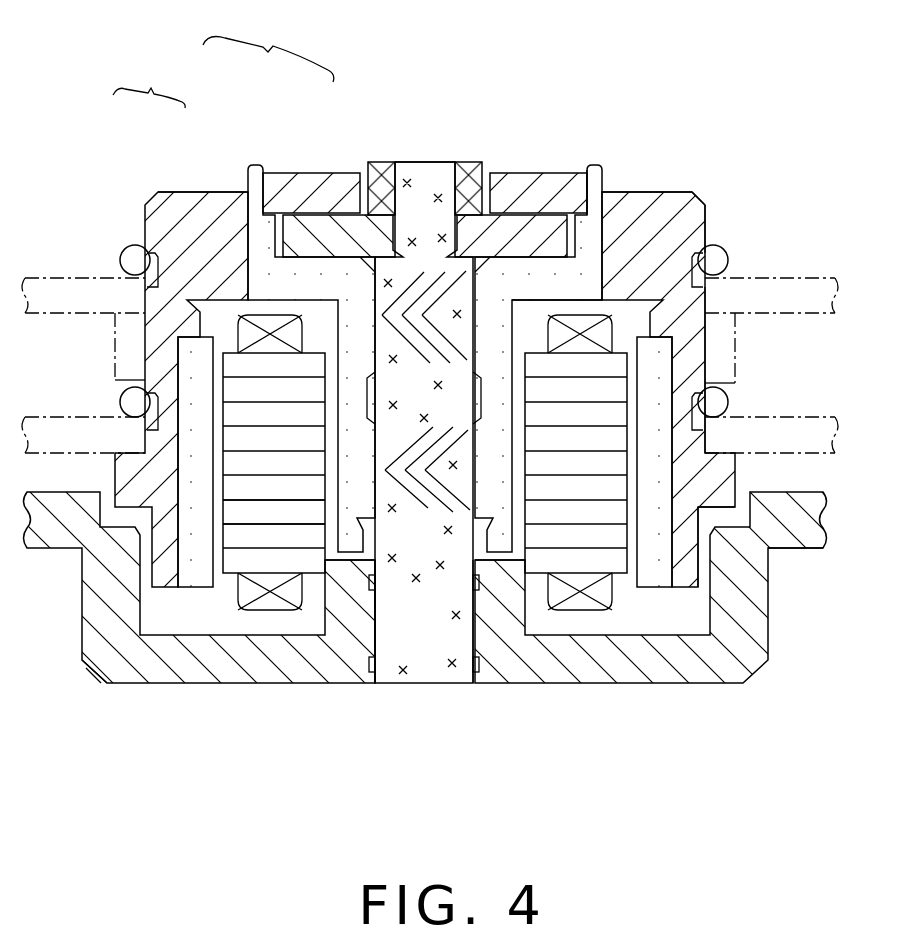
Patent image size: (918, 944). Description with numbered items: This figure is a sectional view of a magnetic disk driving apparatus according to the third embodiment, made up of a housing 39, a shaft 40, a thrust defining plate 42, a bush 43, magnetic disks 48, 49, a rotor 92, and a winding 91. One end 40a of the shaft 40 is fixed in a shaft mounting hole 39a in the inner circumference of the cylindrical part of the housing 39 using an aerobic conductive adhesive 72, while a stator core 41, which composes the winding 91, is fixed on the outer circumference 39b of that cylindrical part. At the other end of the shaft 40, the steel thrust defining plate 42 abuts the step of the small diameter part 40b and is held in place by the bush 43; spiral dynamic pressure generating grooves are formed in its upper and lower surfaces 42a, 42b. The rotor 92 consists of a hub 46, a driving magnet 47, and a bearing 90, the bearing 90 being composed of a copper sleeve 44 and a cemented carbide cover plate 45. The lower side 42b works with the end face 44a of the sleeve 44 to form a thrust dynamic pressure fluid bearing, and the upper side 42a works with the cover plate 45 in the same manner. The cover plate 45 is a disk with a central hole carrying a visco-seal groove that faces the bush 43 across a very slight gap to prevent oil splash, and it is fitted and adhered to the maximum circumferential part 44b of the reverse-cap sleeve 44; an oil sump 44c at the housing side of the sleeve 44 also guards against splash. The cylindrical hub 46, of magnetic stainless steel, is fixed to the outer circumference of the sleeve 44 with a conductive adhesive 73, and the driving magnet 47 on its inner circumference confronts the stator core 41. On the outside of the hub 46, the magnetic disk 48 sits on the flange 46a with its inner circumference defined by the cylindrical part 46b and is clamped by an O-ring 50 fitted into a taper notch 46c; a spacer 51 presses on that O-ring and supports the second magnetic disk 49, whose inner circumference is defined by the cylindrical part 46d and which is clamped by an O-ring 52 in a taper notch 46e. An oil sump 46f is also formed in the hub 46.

The housing 39 is at (150, 683).
The shaft mounting hole 39a is at (355, 620).
The outer circumference of the cylindrical part 39b is at (370, 600).
The shaft 40 is at (427, 510).
The one end of the shaft 40a is at (375, 635).
The small diameter part 40b is at (428, 168).
The stator core 41 is at (88, 627).
The thrust defining plate 42 is at (500, 230).
The upper surface of the thrust defining plate 42a is at (540, 250).
The lower surface of the thrust defining plate 42b is at (588, 178).
The bush 43 is at (377, 165).
The sleeve 44 is at (247, 207).
The end face of the sleeve 44a is at (535, 262).
The maximum circumferential part of the sleeve 44b is at (252, 213).
The oil sump 44c is at (253, 540).
The cover plate 45 is at (310, 185).
The hub 46 is at (175, 200).
The flange 46a is at (803, 548).
The defining cylindrical part 46b is at (715, 545).
The taper notch 46c is at (703, 372).
The defining cylindrical part 46d is at (708, 297).
The taper notch 46e is at (703, 236).
The oil sump 46f is at (708, 230).
The driving magnet 47 is at (193, 345).
The magnetic disk 48 is at (63, 450).
The magnetic disk 49 is at (75, 287).
The O-ring 50 is at (125, 400).
The spacer 51 is at (125, 363).
The O-ring 52 is at (130, 252).
The conductive adhesive 72 is at (370, 662).
The conductive adhesive 73 is at (233, 213).
The bearing 90 is at (268, 46).
The winding 91 is at (233, 517).
The rotor 92 is at (149, 81).